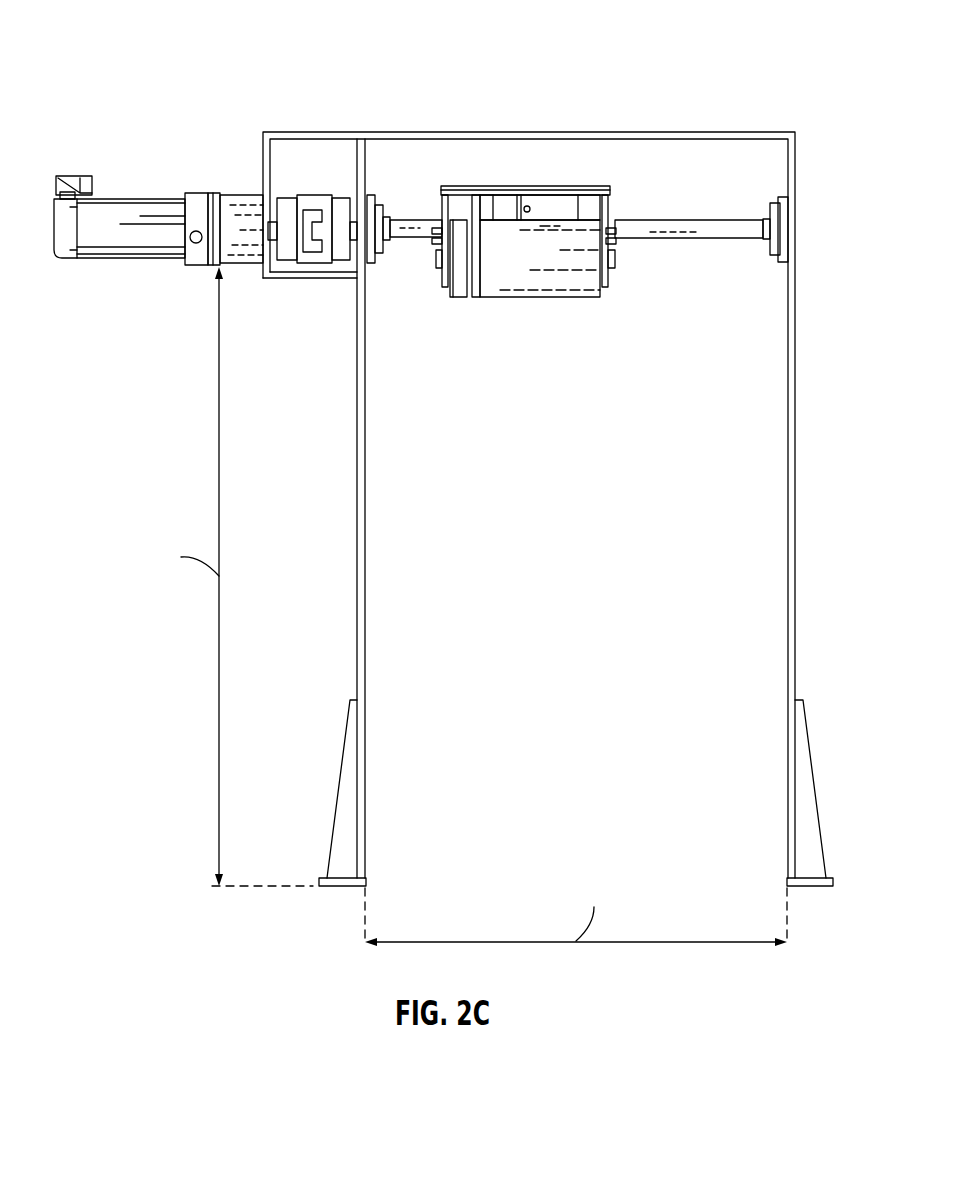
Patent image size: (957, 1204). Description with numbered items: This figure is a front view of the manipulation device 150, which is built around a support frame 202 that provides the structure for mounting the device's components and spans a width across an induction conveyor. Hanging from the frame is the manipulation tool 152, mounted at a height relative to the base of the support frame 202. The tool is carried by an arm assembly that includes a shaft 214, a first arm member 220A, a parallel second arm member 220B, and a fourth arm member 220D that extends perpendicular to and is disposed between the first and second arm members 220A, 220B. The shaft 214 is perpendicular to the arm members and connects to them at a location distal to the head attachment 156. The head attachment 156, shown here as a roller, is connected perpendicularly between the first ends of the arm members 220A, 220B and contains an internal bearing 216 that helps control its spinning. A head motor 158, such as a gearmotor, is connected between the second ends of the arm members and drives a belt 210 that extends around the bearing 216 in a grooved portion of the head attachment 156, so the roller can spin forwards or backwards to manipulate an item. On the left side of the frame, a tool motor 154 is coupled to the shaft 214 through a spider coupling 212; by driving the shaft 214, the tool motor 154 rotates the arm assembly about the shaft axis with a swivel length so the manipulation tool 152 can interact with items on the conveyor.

The manipulation device 150 is at (118, 72).
The manipulation tool 152 is at (630, 310).
The tool motor 154 is at (121, 253).
The head attachment 156 is at (553, 282).
The head motor 158 is at (612, 205).
The support frame 202 is at (797, 322).
The belt 210 is at (473, 203).
The spider coupling 212 is at (303, 198).
The shaft 214 is at (728, 228).
The internal bearing 216 is at (470, 272).
The first arm member 220A is at (612, 228).
The second arm member 220B is at (440, 210).
The fourth arm member 220D is at (537, 186).